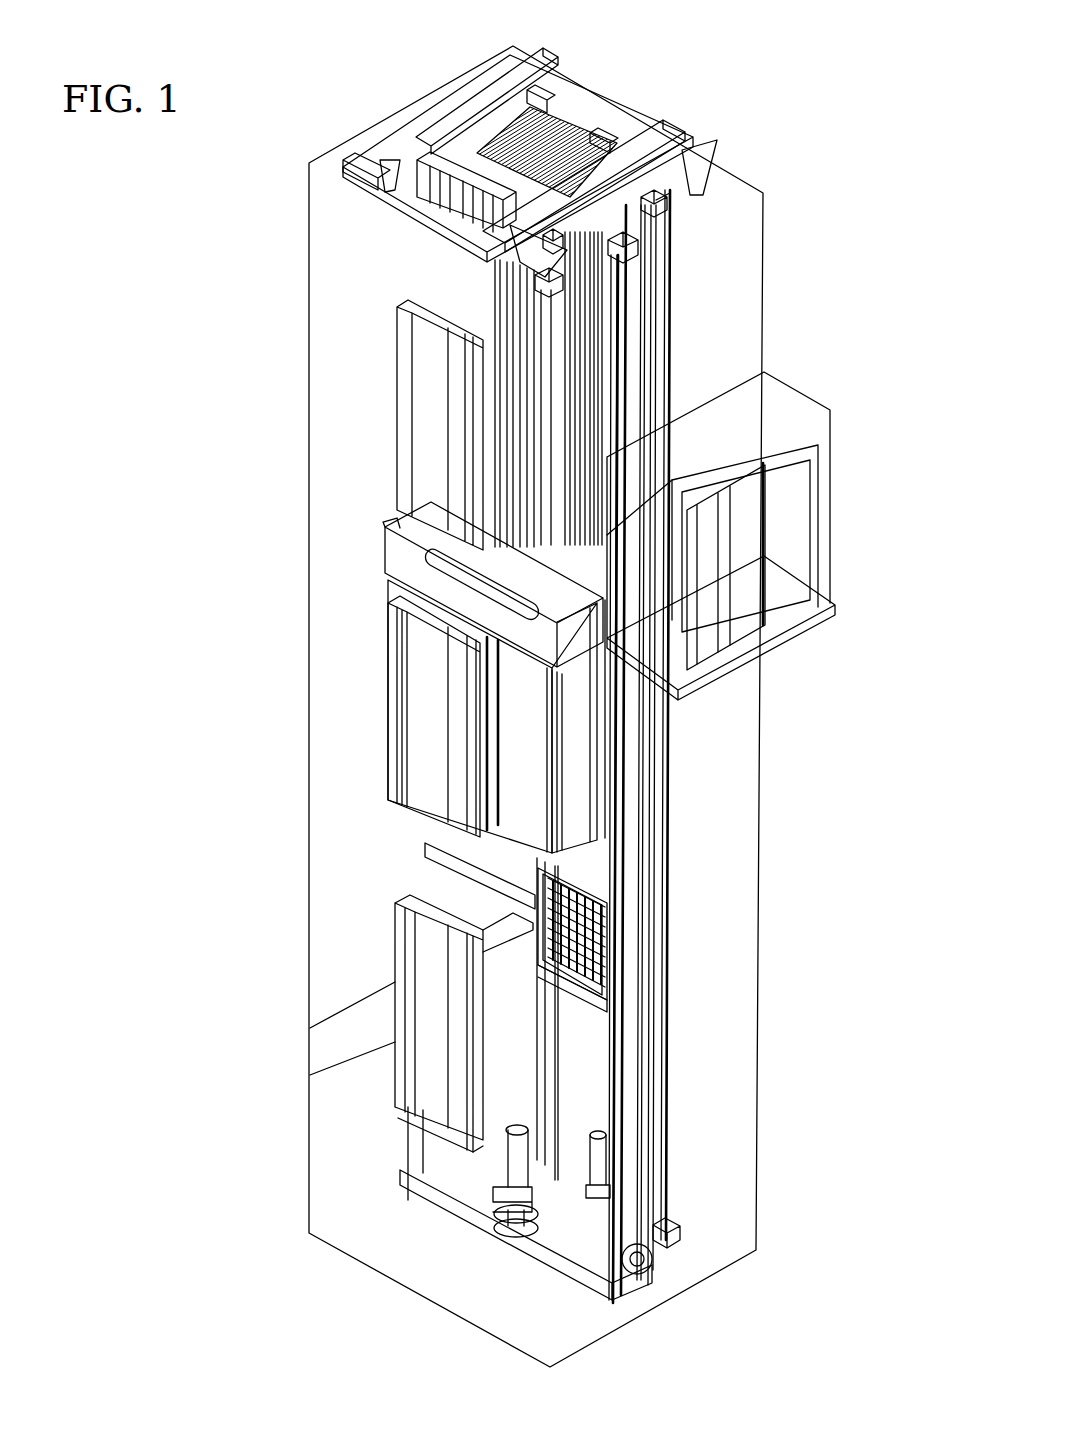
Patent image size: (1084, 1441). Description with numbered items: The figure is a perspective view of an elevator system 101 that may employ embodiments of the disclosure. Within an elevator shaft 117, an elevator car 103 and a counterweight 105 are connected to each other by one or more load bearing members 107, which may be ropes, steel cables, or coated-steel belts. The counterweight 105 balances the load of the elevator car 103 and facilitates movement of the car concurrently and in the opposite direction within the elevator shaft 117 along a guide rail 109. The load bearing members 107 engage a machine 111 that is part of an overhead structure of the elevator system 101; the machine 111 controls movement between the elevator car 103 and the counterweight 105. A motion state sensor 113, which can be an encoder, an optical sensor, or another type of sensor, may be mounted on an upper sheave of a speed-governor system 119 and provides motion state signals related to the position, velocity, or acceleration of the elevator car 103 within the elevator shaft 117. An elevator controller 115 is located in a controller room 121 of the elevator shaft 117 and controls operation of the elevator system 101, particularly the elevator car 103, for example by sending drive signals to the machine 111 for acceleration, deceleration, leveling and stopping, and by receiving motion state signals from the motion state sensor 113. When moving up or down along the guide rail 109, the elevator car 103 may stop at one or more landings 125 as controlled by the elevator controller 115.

The elevator system 101 is at (795, 72).
The elevator car 103 is at (533, 751).
The counterweight 105 is at (608, 948).
The load bearing members 107 is at (540, 417).
The guide rail 109 is at (637, 872).
The machine 111 is at (437, 158).
The motion state sensor 113 is at (645, 228).
The elevator controller 115 is at (765, 548).
The elevator shaft 117 is at (368, 875).
The speed-governor system 119 is at (653, 288).
The controller room 121 is at (842, 405).
The landings 125 is at (397, 415).